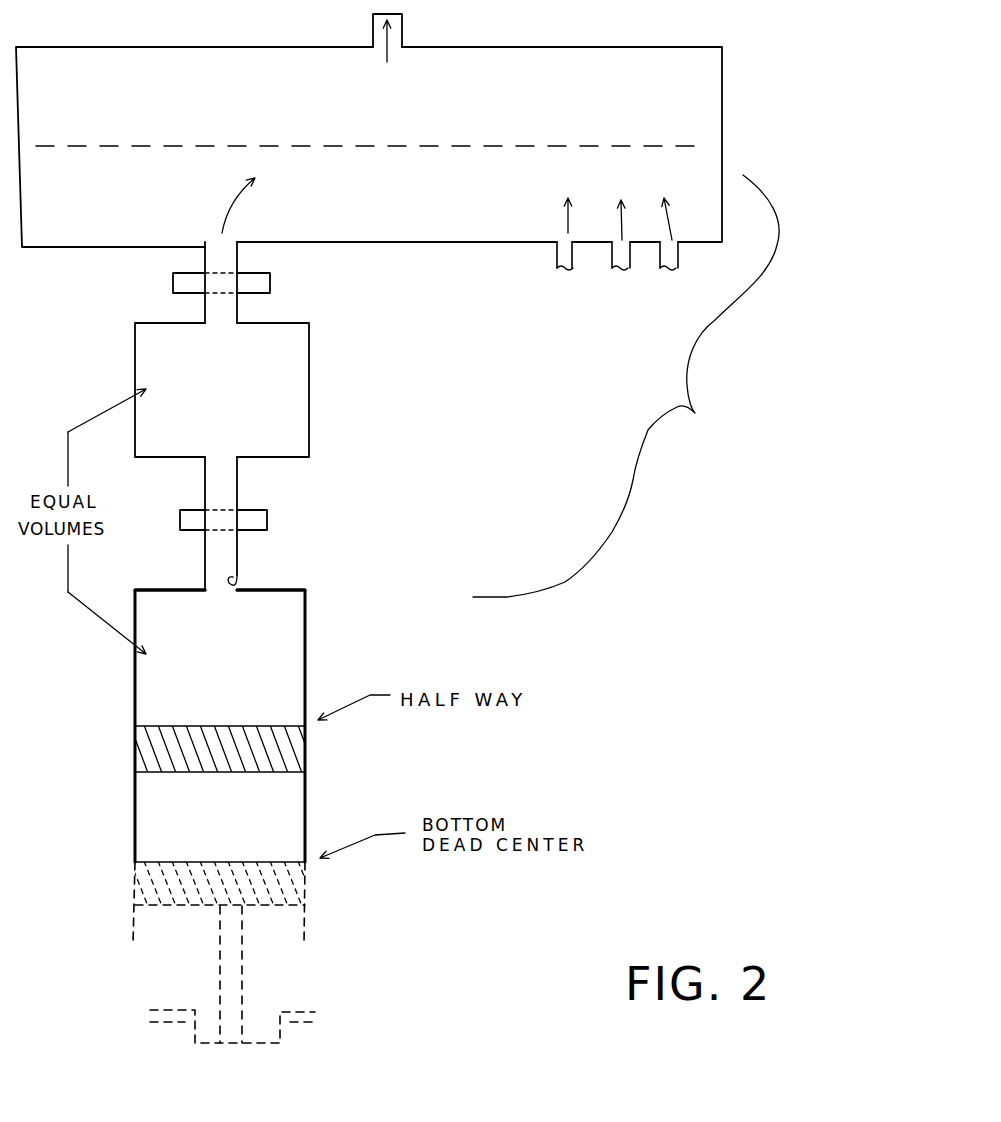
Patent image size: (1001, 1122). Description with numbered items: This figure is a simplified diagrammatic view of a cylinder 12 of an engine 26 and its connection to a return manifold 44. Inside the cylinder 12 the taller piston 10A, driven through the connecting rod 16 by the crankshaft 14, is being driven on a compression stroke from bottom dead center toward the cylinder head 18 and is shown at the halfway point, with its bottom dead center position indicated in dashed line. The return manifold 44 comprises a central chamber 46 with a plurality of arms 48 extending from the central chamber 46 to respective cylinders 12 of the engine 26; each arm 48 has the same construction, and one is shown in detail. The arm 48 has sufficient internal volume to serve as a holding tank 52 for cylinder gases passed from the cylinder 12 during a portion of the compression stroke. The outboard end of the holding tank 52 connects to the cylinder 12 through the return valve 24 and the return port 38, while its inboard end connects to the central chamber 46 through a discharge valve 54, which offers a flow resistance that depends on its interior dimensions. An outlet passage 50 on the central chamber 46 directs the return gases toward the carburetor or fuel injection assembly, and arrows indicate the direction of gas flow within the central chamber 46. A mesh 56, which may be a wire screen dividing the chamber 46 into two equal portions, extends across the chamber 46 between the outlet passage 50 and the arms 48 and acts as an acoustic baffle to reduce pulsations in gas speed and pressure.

The taller piston 10A is at (305, 746).
The cylinder 12 is at (305, 658).
The crankshaft 14 is at (285, 1003).
The connecting rod 16 is at (245, 937).
The cylinder head 18 is at (310, 600).
The return valve 24 is at (267, 522).
The engine 26 is at (637, 632).
The return port 38 is at (240, 570).
The return manifold 44 is at (656, 386).
The central chamber 46 is at (722, 92).
The arms 48 is at (666, 263).
The outlet passage 50 is at (402, 30).
The holding tank 52 is at (310, 373).
The discharge valve 54 is at (270, 285).
The mesh 56 is at (517, 142).